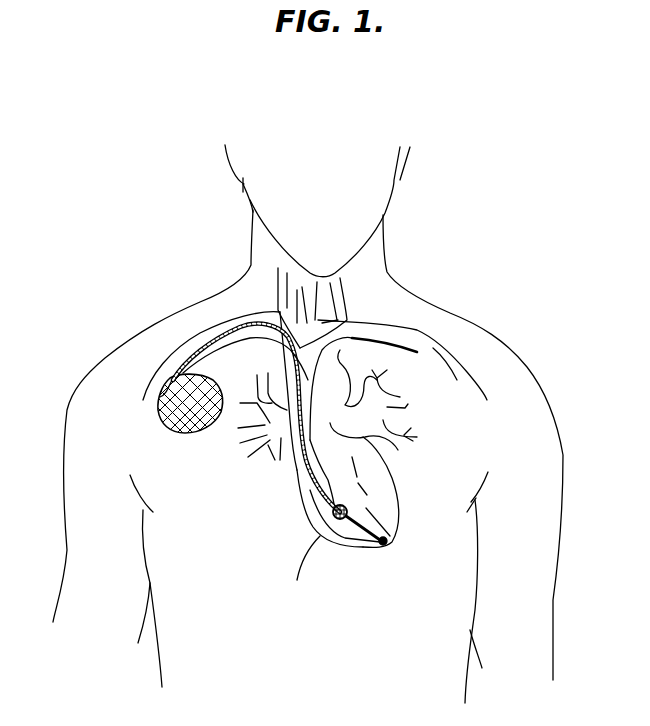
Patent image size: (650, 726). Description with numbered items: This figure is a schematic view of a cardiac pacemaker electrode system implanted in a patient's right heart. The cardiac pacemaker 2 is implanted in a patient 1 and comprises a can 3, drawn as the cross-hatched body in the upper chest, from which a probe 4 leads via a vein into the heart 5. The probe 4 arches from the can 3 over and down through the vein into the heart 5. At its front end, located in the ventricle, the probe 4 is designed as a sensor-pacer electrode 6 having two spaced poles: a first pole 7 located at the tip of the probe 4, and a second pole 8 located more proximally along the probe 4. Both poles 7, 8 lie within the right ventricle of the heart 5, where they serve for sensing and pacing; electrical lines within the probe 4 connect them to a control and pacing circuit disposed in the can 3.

The patient 1 is at (530, 365).
The cardiac pacemaker 2 is at (127, 395).
The can 3 is at (163, 407).
The probe 4 is at (213, 330).
The heart 5 is at (302, 576).
The sensor-pacer electrode 6 is at (364, 507).
The first pole 7 is at (382, 545).
The second pole 8 is at (340, 520).